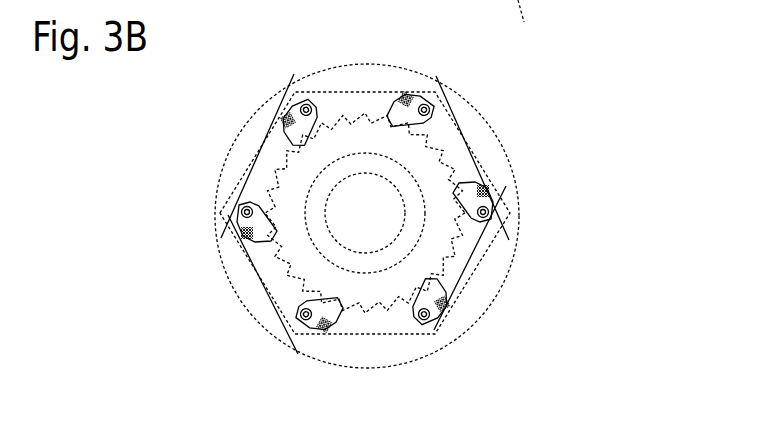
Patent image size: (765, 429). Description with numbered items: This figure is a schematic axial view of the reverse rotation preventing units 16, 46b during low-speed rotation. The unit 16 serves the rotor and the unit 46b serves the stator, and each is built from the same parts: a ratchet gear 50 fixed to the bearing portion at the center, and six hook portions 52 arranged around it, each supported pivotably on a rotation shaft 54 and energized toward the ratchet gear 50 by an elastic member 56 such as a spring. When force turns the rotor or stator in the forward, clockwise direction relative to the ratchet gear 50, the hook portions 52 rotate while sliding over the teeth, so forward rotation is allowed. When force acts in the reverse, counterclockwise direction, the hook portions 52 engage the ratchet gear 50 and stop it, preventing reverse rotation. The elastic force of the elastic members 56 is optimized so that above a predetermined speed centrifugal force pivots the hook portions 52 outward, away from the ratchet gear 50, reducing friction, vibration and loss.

The reverse rotation preventing unit 16 is at (442, 184).
The reverse rotation preventing unit 46b is at (512, 153).
The ratchet gear 50 is at (430, 147).
The hook portion 52 is at (445, 379).
The rotation shaft 54 is at (312, 98).
The elastic member 56 is at (284, 117).